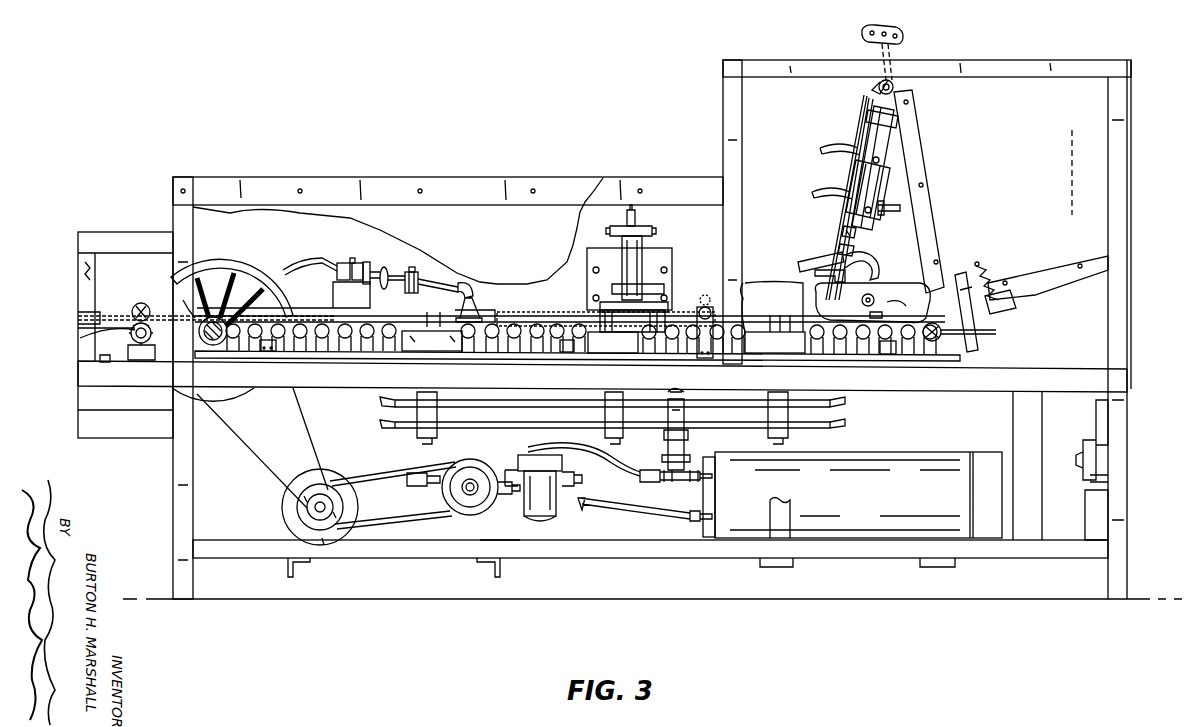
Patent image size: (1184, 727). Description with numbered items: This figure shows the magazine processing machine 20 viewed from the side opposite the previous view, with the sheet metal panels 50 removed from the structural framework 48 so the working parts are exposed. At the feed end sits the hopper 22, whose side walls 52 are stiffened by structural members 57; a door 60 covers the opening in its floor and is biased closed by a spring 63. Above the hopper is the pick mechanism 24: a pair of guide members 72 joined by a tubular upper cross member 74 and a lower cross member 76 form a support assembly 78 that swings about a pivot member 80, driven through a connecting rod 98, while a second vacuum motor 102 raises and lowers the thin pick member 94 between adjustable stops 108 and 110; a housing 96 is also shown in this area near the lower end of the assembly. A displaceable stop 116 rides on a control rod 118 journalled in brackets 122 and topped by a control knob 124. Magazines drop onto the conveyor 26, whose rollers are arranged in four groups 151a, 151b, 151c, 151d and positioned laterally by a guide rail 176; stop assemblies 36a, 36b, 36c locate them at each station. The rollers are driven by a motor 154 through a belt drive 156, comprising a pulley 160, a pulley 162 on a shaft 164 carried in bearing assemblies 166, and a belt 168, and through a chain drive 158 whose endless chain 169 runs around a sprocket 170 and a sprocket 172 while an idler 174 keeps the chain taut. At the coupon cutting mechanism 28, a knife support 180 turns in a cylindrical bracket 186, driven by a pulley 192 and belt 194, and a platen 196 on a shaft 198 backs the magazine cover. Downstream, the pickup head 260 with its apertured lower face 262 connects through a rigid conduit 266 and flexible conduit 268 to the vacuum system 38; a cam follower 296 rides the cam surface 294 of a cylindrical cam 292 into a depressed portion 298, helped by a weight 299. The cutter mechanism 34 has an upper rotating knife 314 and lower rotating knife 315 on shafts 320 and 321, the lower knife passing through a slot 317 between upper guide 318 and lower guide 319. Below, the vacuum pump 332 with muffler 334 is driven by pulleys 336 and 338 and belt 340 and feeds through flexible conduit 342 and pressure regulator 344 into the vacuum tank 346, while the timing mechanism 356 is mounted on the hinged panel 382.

The magazine processing machine 20 is at (669, 100).
The hopper 22 is at (1025, 98).
The pick mechanism 24 is at (848, 133).
The conveyor 26 is at (568, 283).
The coupon cutting mechanism 28 is at (617, 211).
The cutter mechanism 34 is at (93, 346).
The stop assembly 36a is at (776, 352).
The stop assembly 36b is at (614, 353).
The stop assembly 36c is at (442, 356).
The vacuum system 38 is at (838, 549).
The structural framework 48 is at (178, 506).
The sheet metal panels 50 is at (493, 190).
The side walls 52 is at (1042, 149).
The structural members 57 is at (930, 232).
The door 60 is at (962, 282).
The spring 63 is at (984, 274).
The guide members 72 is at (856, 142).
The upper cross member 74 is at (878, 86).
The lower cross member 76 is at (836, 282).
The support assembly 78 is at (838, 180).
The pivot member 80 is at (894, 88).
The pick member 94 is at (888, 312).
The housing 96 is at (848, 309).
The connecting rod 98 is at (902, 208).
The second vacuum motor 102 is at (890, 186).
The adjustable stop 108 is at (854, 218).
The adjustable stop 110 is at (836, 248).
The displaceable stop 116 is at (800, 264).
The control rod 118 is at (866, 98).
The brackets 122 is at (898, 118).
The control knob 124 is at (897, 30).
The group of rollers 151a is at (870, 352).
The group of rollers 151b is at (704, 351).
The group of rollers 151c is at (527, 348).
The group of rollers 151d is at (418, 343).
The motor 154 is at (282, 512).
The belt drive 156 is at (312, 406).
The chain drive 158 is at (277, 306).
The pulley 160 is at (307, 493).
The pulley 162 is at (213, 262).
The shaft 164 is at (213, 316).
The bearing assemblies 166 is at (222, 360).
The belt 168 is at (232, 438).
The endless chain 169 is at (330, 356).
The sprocket 170 is at (187, 318).
The sprocket 172 is at (926, 322).
The idler 174 is at (705, 296).
The guide rail 176 is at (535, 315).
The knife support 180 is at (652, 290).
The cylindrical bracket 186 is at (636, 256).
The pulley 192 is at (614, 230).
The belt 194 is at (608, 232).
The platen 196 is at (598, 303).
The shaft 198 is at (641, 218).
The pickup head 260 is at (466, 312).
The lower face 262 is at (480, 315).
The rigid conduit 266 is at (438, 282).
The flexible conduit 268 is at (332, 262).
The cylindrical cam 292 is at (298, 266).
The cam surface 294 is at (358, 262).
The cam follower 296 is at (409, 272).
The depressed portion 298 is at (300, 306).
The weight 299 is at (428, 262).
The upper rotating knife 314 is at (140, 303).
The lower rotating knife 315 is at (126, 314).
The slot 317 is at (143, 343).
The upper guide 318 is at (88, 316).
The lower guide 319 is at (96, 330).
The shaft 320 is at (130, 305).
The shaft 321 is at (141, 362).
The vacuum pump 332 is at (495, 542).
The muffler 334 is at (556, 520).
The pulley 336 is at (324, 541).
The pulley 338 is at (468, 466).
The belt 340 is at (378, 472).
The flexible conduit 342 is at (536, 448).
The pressure regulator 344 is at (686, 402).
The vacuum tank 346 is at (886, 492).
The timing mechanism 356 is at (1085, 455).
The hinged panel 382 is at (1128, 490).